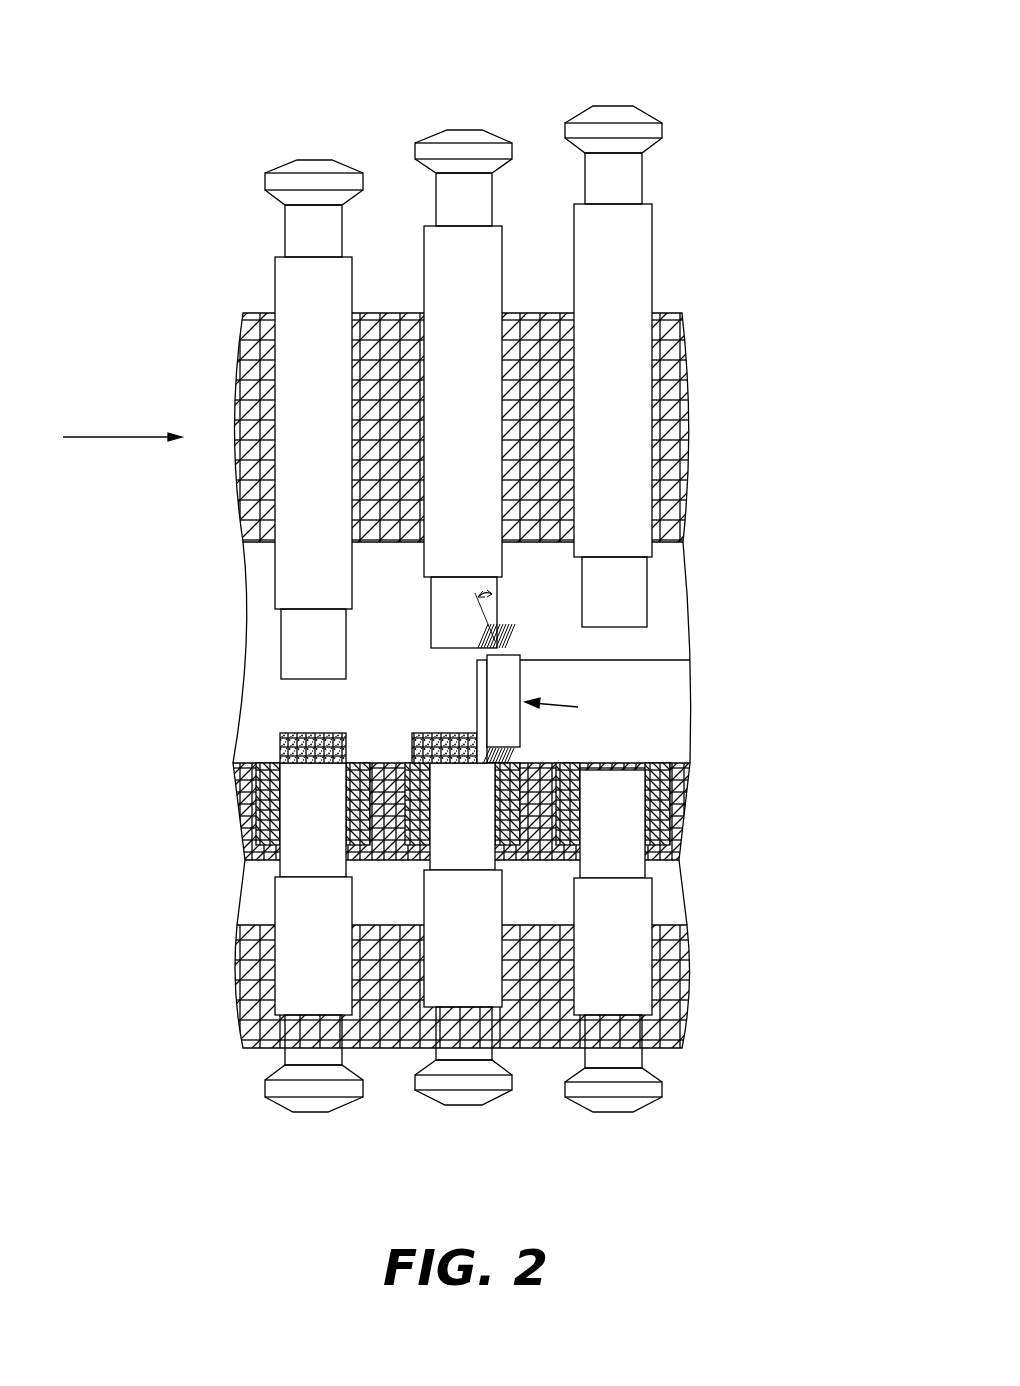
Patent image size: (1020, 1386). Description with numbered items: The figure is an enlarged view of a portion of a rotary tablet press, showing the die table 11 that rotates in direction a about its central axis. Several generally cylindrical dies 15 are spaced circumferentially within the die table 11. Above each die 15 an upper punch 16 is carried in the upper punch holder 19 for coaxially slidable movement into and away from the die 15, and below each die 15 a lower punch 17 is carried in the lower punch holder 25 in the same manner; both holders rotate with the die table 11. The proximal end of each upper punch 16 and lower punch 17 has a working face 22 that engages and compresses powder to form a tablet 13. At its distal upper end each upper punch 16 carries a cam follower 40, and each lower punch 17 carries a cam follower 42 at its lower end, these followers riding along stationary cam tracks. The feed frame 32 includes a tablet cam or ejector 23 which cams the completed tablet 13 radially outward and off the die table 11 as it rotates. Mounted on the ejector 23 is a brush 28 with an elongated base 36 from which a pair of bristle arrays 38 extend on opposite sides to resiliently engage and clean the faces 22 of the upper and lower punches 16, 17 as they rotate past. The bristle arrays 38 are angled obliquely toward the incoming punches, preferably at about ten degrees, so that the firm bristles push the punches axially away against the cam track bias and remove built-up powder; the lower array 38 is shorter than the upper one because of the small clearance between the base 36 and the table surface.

The die table 11 is at (676, 772).
The tablet 13 is at (305, 733).
The die 15 is at (655, 798).
The upper punch 16 is at (330, 399).
The lower punch 17 is at (330, 961).
The upper punch holder 19 is at (672, 462).
The working face 22 is at (300, 680).
The tablet cam or ejector 23 is at (477, 672).
The lower punch holder 25 is at (677, 972).
The brush 28 is at (570, 709).
The feed frame 32 is at (669, 709).
The base or block 36 is at (500, 695).
The bristle array 38 is at (512, 638).
The cam follower 40 is at (340, 160).
The cam follower 42 is at (310, 1112).
The direction of rotation a is at (113, 437).